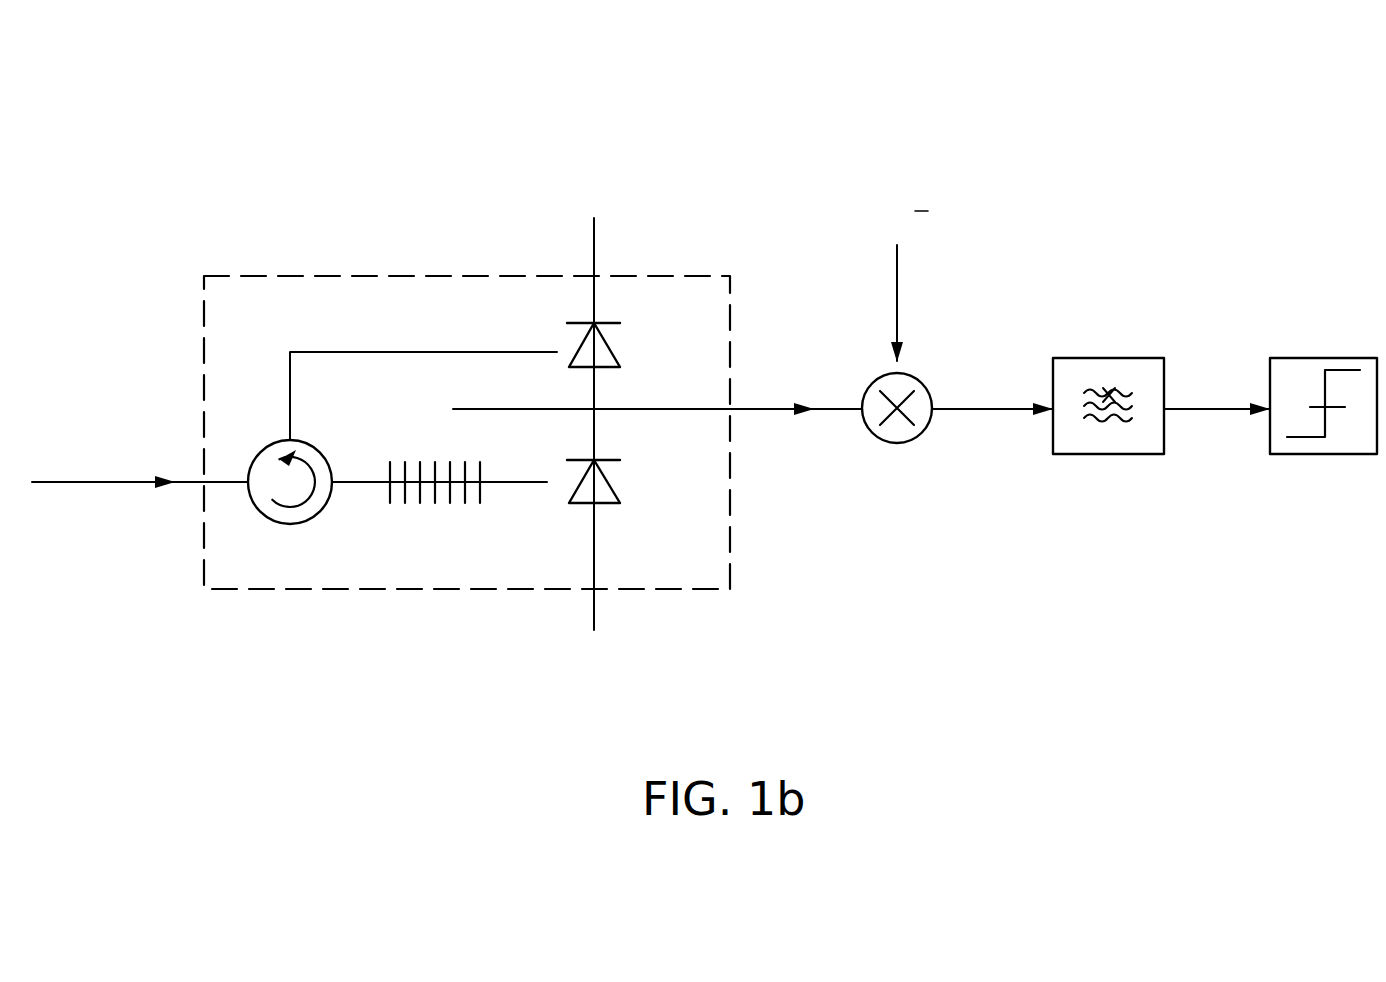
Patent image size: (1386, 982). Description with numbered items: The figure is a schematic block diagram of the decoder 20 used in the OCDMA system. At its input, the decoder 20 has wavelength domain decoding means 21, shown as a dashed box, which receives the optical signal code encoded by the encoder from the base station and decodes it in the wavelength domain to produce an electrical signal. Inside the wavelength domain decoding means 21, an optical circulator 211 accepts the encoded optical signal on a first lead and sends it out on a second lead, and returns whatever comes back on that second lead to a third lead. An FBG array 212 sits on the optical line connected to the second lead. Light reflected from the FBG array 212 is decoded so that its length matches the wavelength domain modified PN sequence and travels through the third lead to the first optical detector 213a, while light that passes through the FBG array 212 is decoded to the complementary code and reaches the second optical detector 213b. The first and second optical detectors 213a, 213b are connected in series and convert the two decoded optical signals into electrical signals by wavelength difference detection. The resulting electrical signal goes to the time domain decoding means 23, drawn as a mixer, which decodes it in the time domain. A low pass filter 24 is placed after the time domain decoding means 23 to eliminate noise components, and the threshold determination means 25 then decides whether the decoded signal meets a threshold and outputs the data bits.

The decoder 20 is at (217, 99).
The wavelength domain decoding means 21 is at (372, 272).
The optical circulator 211 is at (287, 527).
The FBG array 212 is at (480, 503).
The first optical detector 213a is at (608, 348).
The second optical detector 213b is at (612, 503).
The time domain decoding means 23 is at (891, 443).
The low pass filter 24 is at (1107, 376).
The threshold determination means 25 is at (1309, 376).